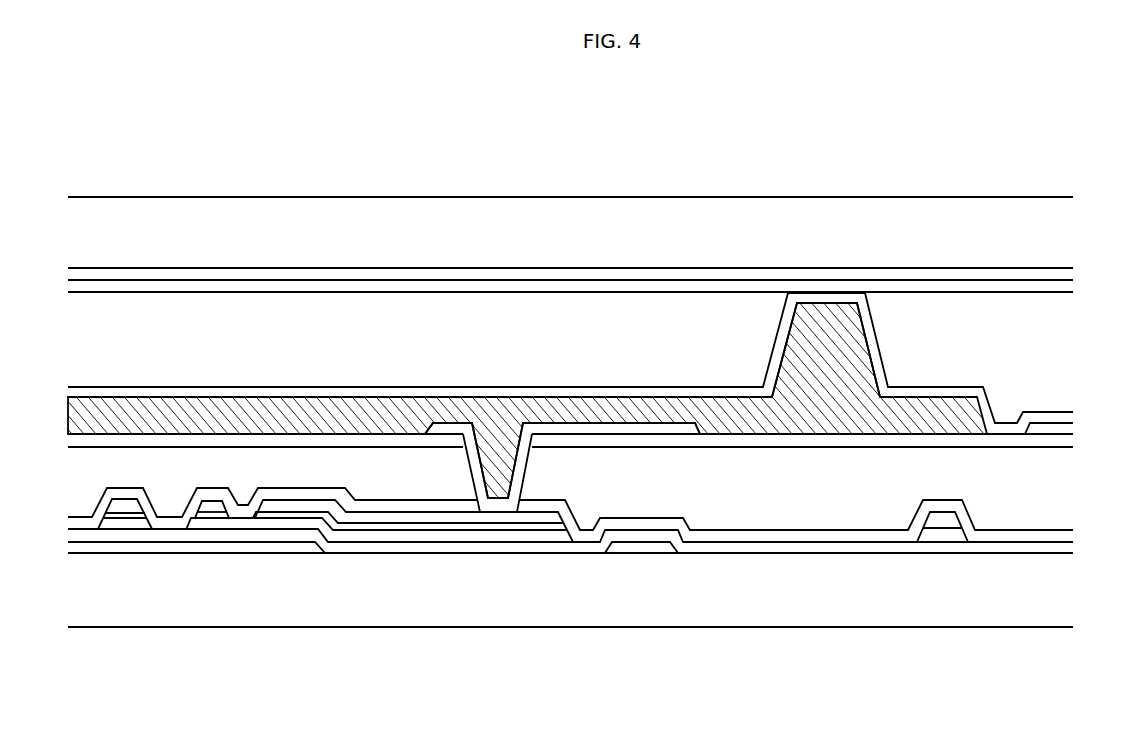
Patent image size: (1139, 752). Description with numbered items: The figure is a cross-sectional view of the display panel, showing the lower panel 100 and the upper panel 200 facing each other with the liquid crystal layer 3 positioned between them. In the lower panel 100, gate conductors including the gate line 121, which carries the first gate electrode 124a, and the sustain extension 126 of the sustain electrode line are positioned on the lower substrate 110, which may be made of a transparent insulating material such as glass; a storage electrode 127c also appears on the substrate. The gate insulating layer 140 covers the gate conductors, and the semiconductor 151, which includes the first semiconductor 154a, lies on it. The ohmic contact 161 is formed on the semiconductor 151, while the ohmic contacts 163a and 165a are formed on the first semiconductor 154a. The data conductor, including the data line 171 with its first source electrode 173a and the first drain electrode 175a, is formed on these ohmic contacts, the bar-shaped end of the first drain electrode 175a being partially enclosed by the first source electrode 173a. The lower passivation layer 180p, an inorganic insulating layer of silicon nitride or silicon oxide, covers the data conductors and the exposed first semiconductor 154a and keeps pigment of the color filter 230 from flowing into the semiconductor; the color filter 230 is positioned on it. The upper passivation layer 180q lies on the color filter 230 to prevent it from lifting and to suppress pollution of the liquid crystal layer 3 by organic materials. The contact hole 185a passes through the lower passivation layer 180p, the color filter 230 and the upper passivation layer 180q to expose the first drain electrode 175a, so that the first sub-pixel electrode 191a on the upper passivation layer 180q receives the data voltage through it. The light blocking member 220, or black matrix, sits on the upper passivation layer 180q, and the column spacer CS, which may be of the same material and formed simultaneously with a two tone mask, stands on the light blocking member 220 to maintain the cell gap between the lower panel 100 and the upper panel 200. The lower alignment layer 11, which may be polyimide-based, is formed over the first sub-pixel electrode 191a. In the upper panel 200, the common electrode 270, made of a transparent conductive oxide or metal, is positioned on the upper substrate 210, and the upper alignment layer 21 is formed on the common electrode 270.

The upper panel 200 is at (598, 218).
The upper substrate 210 is at (407, 212).
The common electrode 270 is at (526, 272).
The upper alignment layer 21 is at (641, 286).
The liquid crystal layer 3 is at (1075, 295).
The column spacer CS is at (822, 305).
The lower panel 100 is at (598, 431).
The lower substrate 110 is at (733, 602).
The gate line 121 is at (95, 546).
The first gate electrode 124a is at (247, 548).
The sustain extension 126 is at (648, 548).
The storage electrode 127c is at (939, 522).
The gate insulating layer 140 is at (528, 546).
The semiconductor 151 is at (136, 524).
The first semiconductor 154a is at (288, 526).
The ohmic contact 161 is at (123, 516).
The ohmic contact 163a is at (204, 514).
The ohmic contact 165a is at (320, 516).
The data line 171 is at (125, 508).
The first source electrode 173a is at (212, 508).
The first drain electrode 175a is at (299, 505).
The lower passivation layer 180p is at (390, 505).
The upper passivation layer 180q is at (368, 440).
The contact hole 185a is at (484, 470).
The first sub-pixel electrode 191a is at (627, 430).
The light blocking member 220 is at (174, 410).
The color filter 230 is at (437, 485).
The lower alignment layer 11 is at (549, 392).